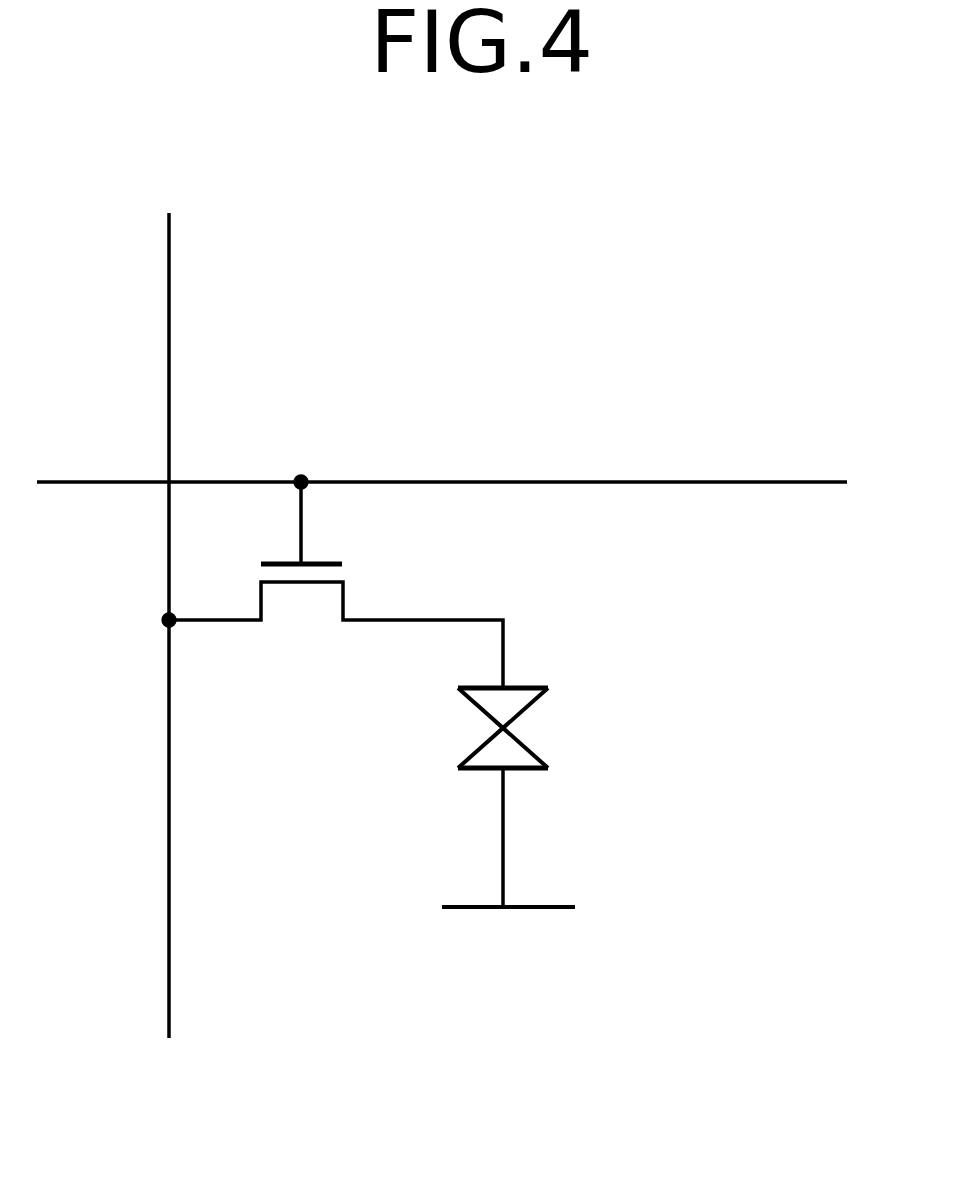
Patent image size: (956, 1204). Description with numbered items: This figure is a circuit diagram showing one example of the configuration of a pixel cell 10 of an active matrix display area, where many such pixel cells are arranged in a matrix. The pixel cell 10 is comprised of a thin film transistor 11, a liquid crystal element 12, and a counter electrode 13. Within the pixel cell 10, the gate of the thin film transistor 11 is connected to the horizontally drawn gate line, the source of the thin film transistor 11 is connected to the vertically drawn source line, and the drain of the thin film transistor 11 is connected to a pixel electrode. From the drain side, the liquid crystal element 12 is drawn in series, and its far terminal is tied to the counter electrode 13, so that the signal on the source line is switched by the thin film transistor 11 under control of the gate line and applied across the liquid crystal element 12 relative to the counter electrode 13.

The pixel cell 10 is at (704, 663).
The TFT 11 is at (303, 623).
The liquid crystal element 12 is at (463, 729).
The counter electrode 13 is at (565, 907).